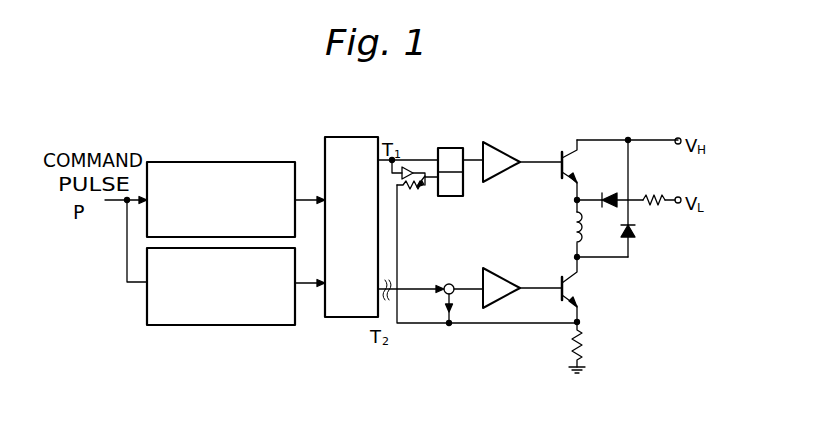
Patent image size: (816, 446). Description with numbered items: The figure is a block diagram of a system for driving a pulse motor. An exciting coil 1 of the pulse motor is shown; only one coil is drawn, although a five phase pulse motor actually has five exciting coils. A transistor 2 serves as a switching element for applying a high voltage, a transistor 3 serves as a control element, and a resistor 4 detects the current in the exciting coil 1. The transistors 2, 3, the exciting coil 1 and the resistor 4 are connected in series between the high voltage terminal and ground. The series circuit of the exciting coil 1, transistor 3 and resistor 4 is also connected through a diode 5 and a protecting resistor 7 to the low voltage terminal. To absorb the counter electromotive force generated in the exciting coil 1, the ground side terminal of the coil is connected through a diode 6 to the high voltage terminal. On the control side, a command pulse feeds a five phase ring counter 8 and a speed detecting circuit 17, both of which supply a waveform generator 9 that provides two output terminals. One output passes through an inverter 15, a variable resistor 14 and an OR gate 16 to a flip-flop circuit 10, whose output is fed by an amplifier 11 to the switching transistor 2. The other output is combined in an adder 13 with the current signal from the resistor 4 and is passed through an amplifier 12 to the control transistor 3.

The exciting coil 1 is at (572, 228).
The transistor 2 is at (584, 170).
The transistor 3 is at (586, 289).
The resistor 4 is at (587, 353).
The diode 5 is at (612, 208).
The diode 6 is at (638, 232).
The protecting resistor 7 is at (653, 196).
The five phase ring counter 8 is at (198, 162).
The waveform generator 9 is at (352, 137).
The flip-flop circuit 10 is at (453, 148).
The amplifier 11 is at (507, 147).
The amplifier 12 is at (510, 281).
The adder 13 is at (452, 284).
The variable resistor 14 is at (405, 193).
The inverter 15 is at (404, 165).
The OR gate 16 is at (429, 190).
The speed detecting circuit 17 is at (220, 327).